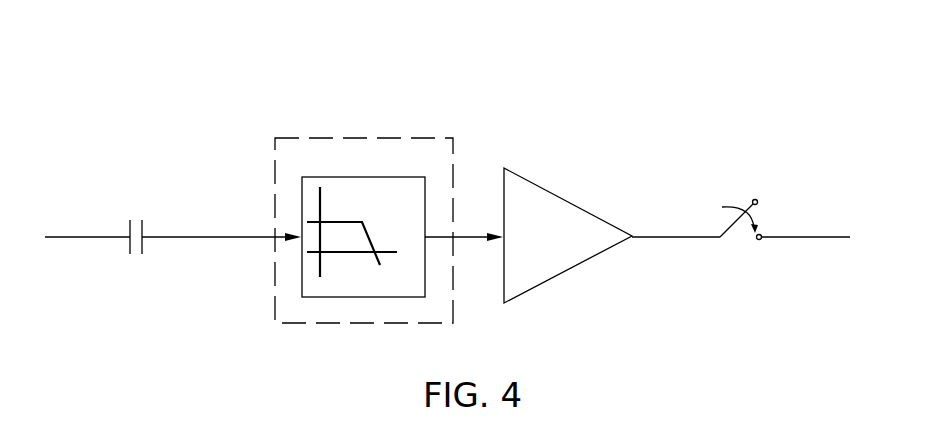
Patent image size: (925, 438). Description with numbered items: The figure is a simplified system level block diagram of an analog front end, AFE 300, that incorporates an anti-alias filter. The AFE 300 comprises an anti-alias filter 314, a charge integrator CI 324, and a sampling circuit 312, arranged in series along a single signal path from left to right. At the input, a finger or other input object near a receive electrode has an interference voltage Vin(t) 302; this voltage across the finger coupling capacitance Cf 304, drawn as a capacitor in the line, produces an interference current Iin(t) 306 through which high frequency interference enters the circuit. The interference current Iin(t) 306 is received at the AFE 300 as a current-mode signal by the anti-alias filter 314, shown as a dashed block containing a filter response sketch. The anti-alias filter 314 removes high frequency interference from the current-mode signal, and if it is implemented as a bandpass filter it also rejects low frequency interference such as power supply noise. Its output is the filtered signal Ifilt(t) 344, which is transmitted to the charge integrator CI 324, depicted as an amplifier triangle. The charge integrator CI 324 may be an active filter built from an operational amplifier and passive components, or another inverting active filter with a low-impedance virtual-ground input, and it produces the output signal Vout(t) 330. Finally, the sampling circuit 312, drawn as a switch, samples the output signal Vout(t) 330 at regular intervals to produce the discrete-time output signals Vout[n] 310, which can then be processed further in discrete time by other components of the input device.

The AFE 300 is at (676, 80).
The interference voltage Vin(t) 302 is at (92, 237).
The finger coupling capacitance Cf 304 is at (138, 188).
The interference current Iin(t) 306 is at (230, 237).
The anti-alias filter 314 is at (335, 138).
The filtered signal Ifilt(t) 344 is at (468, 232).
The charge integrator CI 324 is at (540, 187).
The output signal Vout(t) 330 is at (652, 237).
The sampling circuit 312 is at (746, 187).
The discrete-time output signals Vout[n] 310 is at (815, 237).